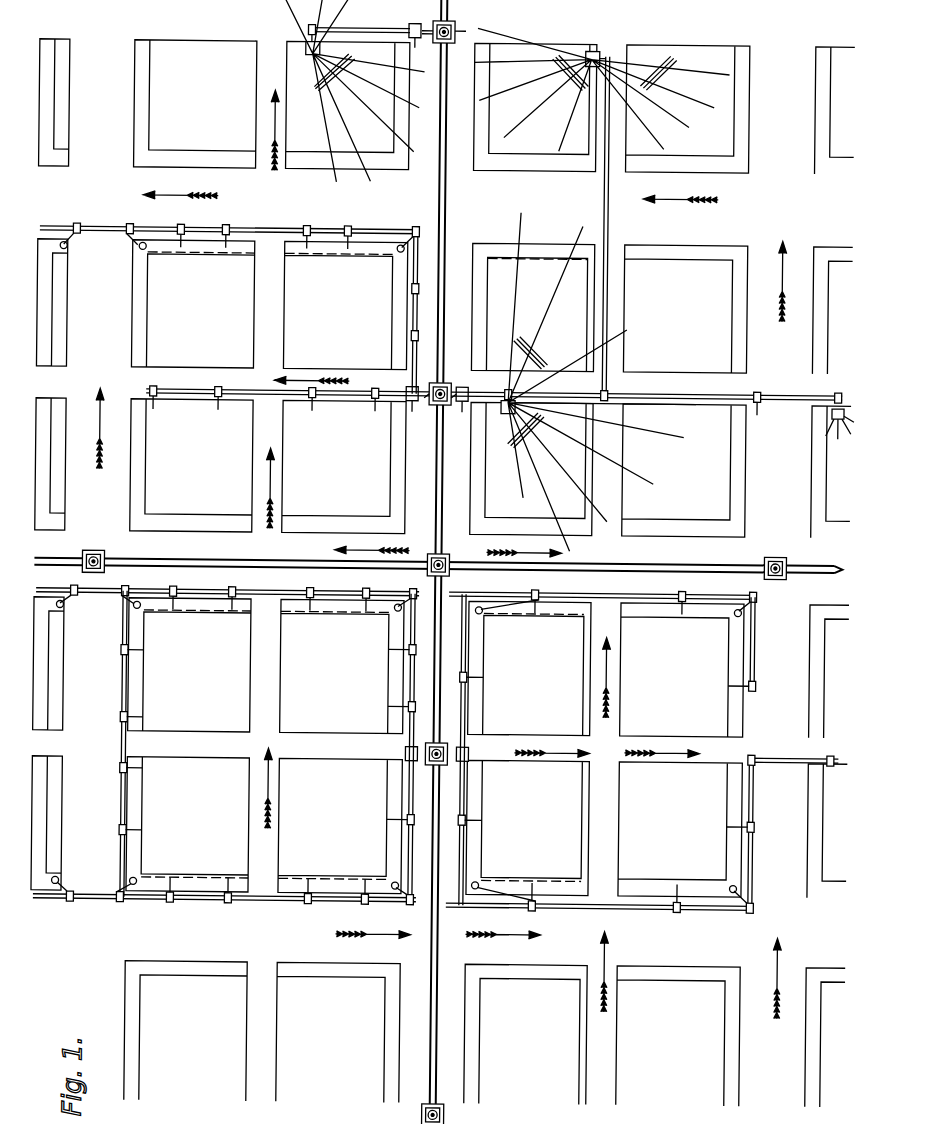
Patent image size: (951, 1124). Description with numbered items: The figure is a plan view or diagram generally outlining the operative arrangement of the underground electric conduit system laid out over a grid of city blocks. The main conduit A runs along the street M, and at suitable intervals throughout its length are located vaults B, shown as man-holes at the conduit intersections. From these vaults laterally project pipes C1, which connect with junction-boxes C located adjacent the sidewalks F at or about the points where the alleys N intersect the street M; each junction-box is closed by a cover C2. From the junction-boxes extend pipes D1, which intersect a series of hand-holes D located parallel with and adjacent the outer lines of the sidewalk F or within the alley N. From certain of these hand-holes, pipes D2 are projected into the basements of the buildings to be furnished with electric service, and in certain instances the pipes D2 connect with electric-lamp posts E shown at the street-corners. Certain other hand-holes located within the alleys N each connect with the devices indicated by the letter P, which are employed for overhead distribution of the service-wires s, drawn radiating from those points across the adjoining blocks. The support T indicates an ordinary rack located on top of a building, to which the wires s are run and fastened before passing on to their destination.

The conduit A is at (448, 197).
The vault B is at (100, 554).
The junction-box C is at (411, 752).
The pipe C1 is at (426, 382).
The cover C2 is at (427, 22).
The hand-hole D is at (305, 31).
The pipe D1 is at (621, 217).
The pipe D2 is at (410, 289).
The electric-lamp post E is at (70, 253).
The sidewalk F is at (396, 167).
The street M is at (430, 571).
The alley N is at (442, 561).
The overhead distribution devices P is at (835, 412).
The support T is at (493, 263).
The service-wires s is at (505, 276).